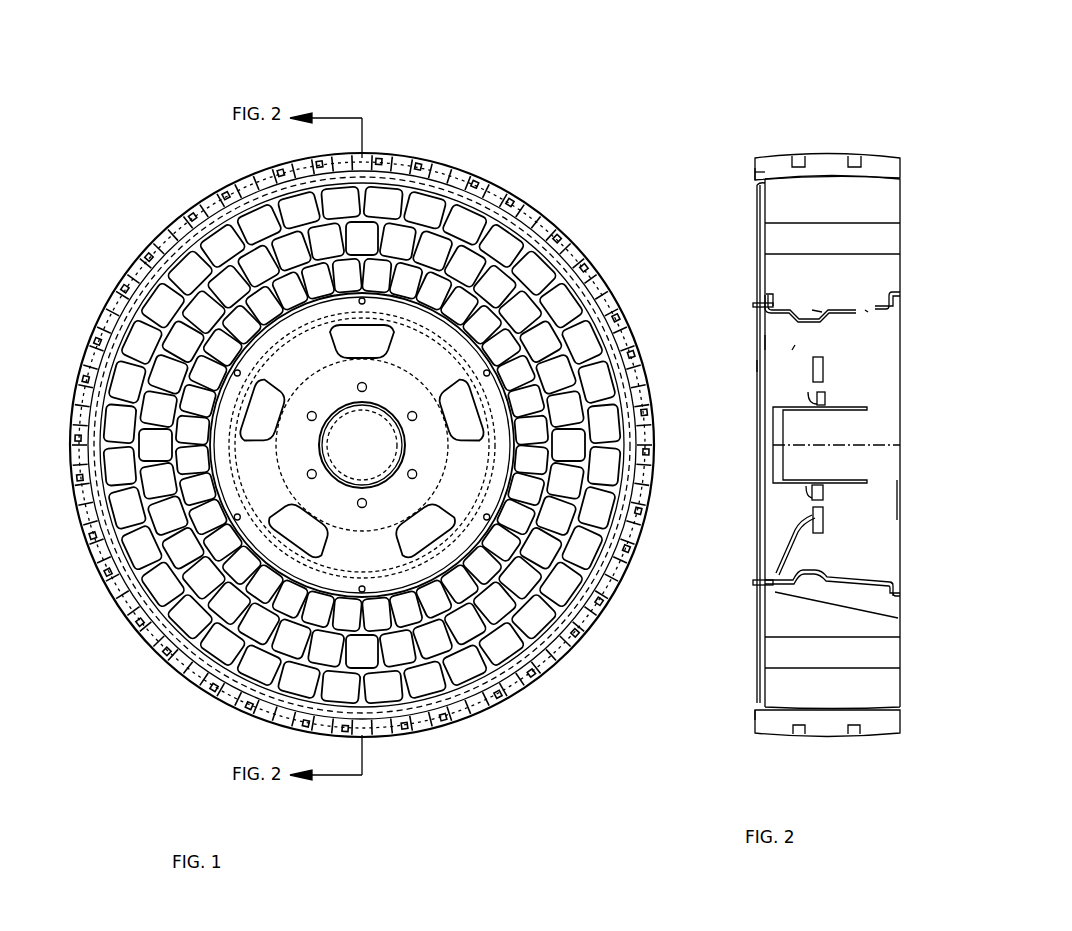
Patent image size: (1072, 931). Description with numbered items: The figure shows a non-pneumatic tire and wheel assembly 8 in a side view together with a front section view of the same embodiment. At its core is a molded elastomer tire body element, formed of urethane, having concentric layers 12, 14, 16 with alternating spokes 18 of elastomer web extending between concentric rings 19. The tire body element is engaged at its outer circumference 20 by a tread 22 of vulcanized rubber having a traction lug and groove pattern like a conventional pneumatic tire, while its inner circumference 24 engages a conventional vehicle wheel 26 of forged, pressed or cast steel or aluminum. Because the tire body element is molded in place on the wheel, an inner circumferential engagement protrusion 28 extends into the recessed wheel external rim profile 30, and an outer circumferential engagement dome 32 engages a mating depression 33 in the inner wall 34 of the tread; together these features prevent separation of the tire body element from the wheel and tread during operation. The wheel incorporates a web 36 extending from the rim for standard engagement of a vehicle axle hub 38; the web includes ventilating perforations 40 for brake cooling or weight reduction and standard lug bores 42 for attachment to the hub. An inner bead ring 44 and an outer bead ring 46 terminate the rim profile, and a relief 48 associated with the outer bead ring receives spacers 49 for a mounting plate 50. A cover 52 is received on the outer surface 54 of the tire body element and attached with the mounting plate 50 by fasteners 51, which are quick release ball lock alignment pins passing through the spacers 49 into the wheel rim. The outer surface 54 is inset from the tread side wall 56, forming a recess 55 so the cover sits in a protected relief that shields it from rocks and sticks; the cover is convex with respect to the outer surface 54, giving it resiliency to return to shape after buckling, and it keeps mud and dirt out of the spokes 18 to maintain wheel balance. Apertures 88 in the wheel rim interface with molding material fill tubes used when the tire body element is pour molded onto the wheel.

In FIG. 2, the non-pneumatic tire and wheel assembly 8 is at (897, 137).
In FIG. 1, the concentric layer 12 is at (532, 268).
In FIG. 2, the concentric layer 12 is at (897, 197).
In FIG. 1, the concentric layer 14 is at (515, 312).
In FIG. 2, the concentric layer 14 is at (897, 245).
In FIG. 1, the concentric layer 16 is at (513, 373).
In FIG. 2, the concentric layer 16 is at (900, 272).
In FIG. 1, the spokes 18 is at (592, 528).
In FIG. 1, the concentric rings 19 is at (577, 642).
In FIG. 1, the outer circumference 20 is at (463, 173).
In FIG. 1, the tread 22 is at (502, 198).
In FIG. 2, the tread 22 is at (825, 157).
In FIG. 2, the inner circumference 24 is at (858, 567).
In FIG. 1, the vehicle wheel 26 is at (373, 542).
In FIG. 2, the vehicle wheel 26 is at (898, 498).
In FIG. 2, the inner circumferential engagement protrusion 28 is at (812, 310).
In FIG. 2, the wheel external rim profile 30 is at (820, 570).
In FIG. 2, the outer circumferential engagement dome 32 is at (855, 712).
In FIG. 2, the mating depression 33 is at (822, 715).
In FIG. 2, the inner wall 34 is at (757, 707).
In FIG. 2, the web 36 is at (793, 528).
In FIG. 2, the vehicle axle hub 38 is at (773, 448).
In FIG. 1, the ventilating perforations 40 is at (300, 527).
In FIG. 2, the ventilating perforations 40 is at (792, 350).
In FIG. 1, the lug bores 42 is at (366, 506).
In FIG. 2, the lug bores 42 is at (815, 445).
In FIG. 2, the inner bead ring 44 is at (900, 582).
In FIG. 2, the outer bead ring 46 is at (773, 592).
In FIG. 2, the relief 48 is at (902, 597).
In FIG. 2, the spacers 49 is at (772, 582).
In FIG. 2, the mounting plate 50 is at (765, 342).
In FIG. 2, the fasteners 51 is at (758, 304).
In FIG. 2, the cover 52 is at (758, 365).
In FIG. 2, the outer surface 54 is at (755, 200).
In FIG. 2, the recess 55 is at (755, 172).
In FIG. 2, the tread side wall 56 is at (755, 170).
In FIG. 2, the apertures 88 is at (865, 310).